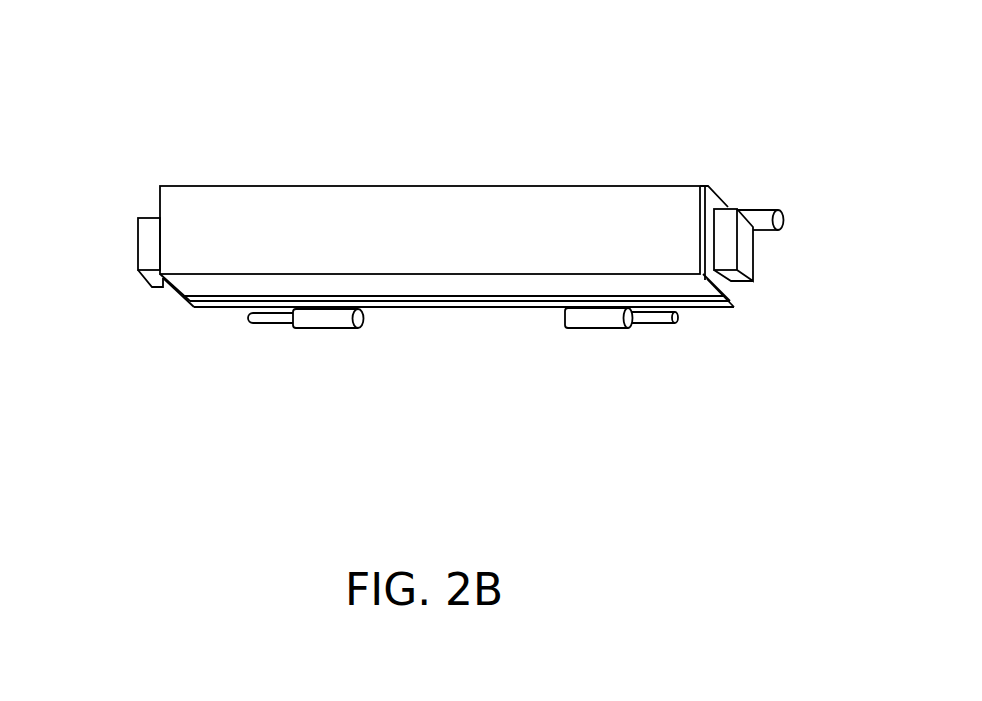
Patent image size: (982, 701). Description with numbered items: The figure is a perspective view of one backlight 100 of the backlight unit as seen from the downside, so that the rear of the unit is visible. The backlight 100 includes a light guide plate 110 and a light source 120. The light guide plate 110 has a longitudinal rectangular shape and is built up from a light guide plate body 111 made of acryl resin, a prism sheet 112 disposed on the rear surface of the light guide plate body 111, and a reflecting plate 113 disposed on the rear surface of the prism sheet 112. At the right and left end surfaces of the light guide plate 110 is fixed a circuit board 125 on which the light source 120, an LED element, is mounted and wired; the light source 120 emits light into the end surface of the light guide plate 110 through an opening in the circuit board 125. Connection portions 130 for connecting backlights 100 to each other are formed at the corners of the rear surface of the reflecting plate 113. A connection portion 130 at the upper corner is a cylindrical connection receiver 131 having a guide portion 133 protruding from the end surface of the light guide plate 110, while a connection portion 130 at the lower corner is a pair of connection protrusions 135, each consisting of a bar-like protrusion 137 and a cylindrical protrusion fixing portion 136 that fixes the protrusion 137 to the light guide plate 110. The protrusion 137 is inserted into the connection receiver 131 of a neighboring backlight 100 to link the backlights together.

The backlight 100 is at (444, 184).
The light guide plate 110 is at (447, 358).
The light guide plate body 111 is at (454, 341).
The prism sheet 112 is at (460, 347).
The reflecting plate 113 is at (555, 388).
The light source 120 is at (442, 245).
The circuit board 125 is at (442, 296).
The connection portion 130 is at (540, 258).
The connection receiver 131 is at (773, 152).
The guide portion 133 is at (760, 187).
The connection protrusion 135 is at (463, 375).
The protrusion fixing portion 136 is at (463, 352).
The protrusion 137 is at (358, 388).